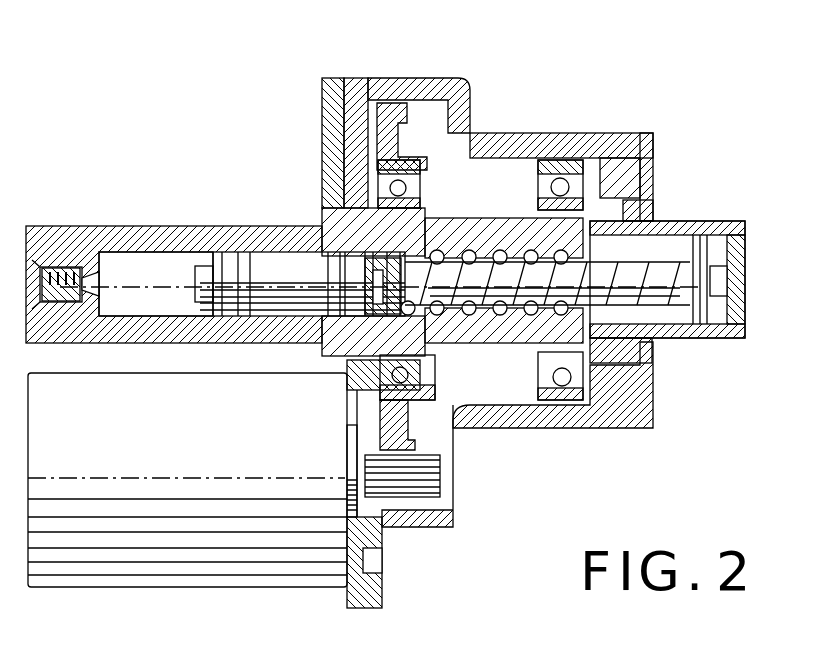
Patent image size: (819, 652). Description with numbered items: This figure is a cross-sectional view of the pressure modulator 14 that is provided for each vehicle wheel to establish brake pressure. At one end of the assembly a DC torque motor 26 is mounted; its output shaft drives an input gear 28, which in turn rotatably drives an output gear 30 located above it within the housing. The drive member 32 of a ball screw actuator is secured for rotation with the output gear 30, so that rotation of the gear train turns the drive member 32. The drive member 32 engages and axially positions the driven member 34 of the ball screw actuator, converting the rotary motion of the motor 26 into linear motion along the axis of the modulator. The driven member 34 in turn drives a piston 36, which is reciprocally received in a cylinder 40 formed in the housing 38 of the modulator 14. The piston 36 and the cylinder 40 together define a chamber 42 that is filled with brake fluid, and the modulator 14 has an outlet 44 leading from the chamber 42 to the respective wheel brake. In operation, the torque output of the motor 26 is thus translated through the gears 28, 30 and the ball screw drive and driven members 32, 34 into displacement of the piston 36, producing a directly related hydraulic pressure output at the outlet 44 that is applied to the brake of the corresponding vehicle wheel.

The pressure modulator 14 is at (113, 206).
The DC torque motor 26 is at (188, 550).
The input gear 28 is at (405, 492).
The output gear 30 is at (395, 113).
The drive member 32 is at (493, 232).
The driven member 34 is at (655, 303).
The piston 36 is at (283, 275).
The housing 38 is at (240, 240).
The cylinder 40 is at (148, 268).
The chamber 42 is at (190, 275).
The outlet 44 is at (62, 268).